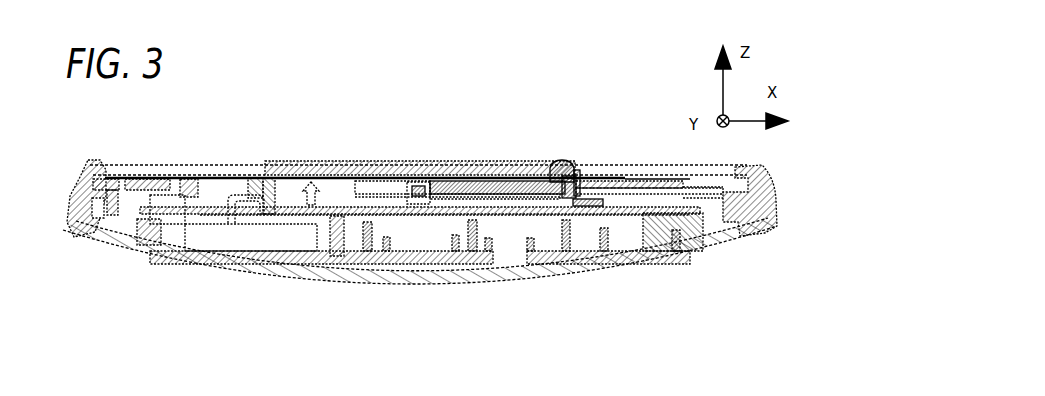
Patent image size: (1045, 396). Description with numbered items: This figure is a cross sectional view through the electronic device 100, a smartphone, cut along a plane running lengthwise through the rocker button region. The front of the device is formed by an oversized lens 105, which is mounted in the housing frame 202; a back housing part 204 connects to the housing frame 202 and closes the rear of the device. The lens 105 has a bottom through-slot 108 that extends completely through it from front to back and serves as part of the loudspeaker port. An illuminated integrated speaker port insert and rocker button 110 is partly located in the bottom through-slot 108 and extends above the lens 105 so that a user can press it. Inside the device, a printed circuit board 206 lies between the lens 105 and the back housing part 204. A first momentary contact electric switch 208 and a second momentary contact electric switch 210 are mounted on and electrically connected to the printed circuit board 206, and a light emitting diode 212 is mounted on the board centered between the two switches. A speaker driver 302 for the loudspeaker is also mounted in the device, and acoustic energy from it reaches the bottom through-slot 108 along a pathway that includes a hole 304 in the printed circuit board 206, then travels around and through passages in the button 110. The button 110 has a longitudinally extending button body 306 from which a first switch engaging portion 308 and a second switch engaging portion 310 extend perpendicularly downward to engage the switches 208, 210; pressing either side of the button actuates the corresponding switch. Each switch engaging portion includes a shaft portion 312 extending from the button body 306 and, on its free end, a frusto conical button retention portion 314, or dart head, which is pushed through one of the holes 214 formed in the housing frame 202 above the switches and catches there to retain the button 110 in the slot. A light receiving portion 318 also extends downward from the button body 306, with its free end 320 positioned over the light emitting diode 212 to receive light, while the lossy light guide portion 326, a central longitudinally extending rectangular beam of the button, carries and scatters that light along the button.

The electronic device 100 is at (424, 324).
The lens 105 is at (158, 166).
The bottom through-slot 108 is at (259, 177).
The illuminated integrated speaker port insert and rocker button 110 is at (477, 167).
The housing frame 202 is at (82, 192).
The back housing part 204 is at (677, 240).
The printed circuit board 206 is at (163, 212).
The first momentary contact electric switch 208 is at (266, 195).
The second momentary contact electric switch 210 is at (568, 192).
The light emitting diode 212 is at (416, 198).
The holes 214 is at (562, 183).
The speaker driver 302 is at (193, 233).
The hole 304 is at (203, 212).
The button body 306 is at (365, 163).
The first switch engaging portion 308 is at (281, 187).
The second switch engaging portion 310 is at (563, 183).
The shaft portion 312 is at (566, 182).
The frusto conical button retention portion 314 is at (578, 196).
The light receiving portion 318 is at (427, 172).
The free end 320 is at (419, 186).
The lossy light guide portion 326 is at (504, 168).